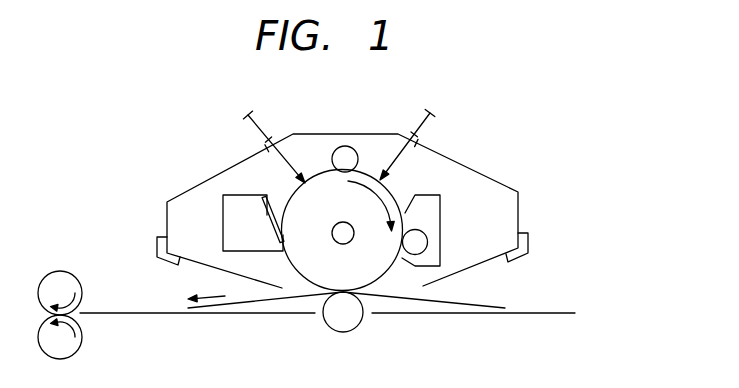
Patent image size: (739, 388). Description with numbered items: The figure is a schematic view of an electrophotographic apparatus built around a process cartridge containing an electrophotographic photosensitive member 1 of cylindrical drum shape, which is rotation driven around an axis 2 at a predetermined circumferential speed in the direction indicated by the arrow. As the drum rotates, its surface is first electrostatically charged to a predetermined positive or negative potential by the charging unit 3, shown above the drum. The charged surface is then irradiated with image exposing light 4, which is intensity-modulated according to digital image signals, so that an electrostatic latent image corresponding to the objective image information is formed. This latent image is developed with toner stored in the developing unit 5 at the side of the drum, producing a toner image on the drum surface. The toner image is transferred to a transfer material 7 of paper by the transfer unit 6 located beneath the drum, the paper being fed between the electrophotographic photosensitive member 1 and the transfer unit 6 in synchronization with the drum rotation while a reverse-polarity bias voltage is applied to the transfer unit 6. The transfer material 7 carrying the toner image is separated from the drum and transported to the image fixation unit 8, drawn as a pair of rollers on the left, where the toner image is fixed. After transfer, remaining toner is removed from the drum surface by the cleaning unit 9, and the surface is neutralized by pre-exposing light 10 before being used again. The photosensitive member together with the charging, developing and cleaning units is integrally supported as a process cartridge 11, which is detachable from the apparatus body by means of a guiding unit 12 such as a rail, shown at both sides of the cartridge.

The electrophotographic photosensitive member 1 is at (292, 200).
The axis 2 is at (337, 223).
The charging unit 3 is at (346, 146).
The image exposing light 4 is at (424, 121).
The developing unit 5 is at (441, 210).
The transfer unit 6 is at (352, 330).
The transfer material 7 is at (462, 304).
The image fixation unit 8 is at (49, 276).
The cleaning unit 9 is at (230, 194).
The pre-exposing light 10 is at (263, 119).
The process cartridge 11 is at (512, 188).
The guiding unit 12 is at (157, 240).